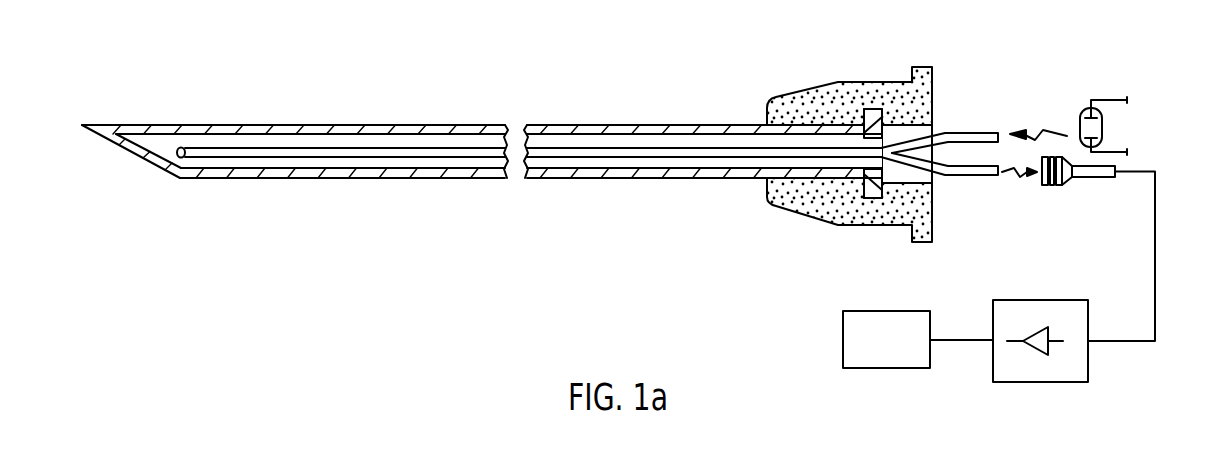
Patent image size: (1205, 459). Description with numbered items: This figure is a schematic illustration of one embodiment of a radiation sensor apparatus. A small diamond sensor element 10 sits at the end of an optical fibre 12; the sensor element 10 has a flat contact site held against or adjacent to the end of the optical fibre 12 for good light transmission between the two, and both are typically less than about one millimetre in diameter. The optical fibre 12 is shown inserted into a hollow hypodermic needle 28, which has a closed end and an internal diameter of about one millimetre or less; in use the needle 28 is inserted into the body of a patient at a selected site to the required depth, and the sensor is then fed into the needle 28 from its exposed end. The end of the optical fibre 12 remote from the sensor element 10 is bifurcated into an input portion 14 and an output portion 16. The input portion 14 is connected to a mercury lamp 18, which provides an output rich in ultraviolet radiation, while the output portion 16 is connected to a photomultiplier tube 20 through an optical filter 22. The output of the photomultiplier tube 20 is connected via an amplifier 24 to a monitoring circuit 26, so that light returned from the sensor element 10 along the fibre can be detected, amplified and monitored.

The diamond sensor element 10 is at (157, 163).
The optical fibre 12 is at (402, 148).
The input portion 14 is at (953, 131).
The output portion 16 is at (970, 177).
The mercury lamp 18 is at (1080, 114).
The photomultiplier tube 20 is at (1095, 179).
The optical filter 22 is at (1040, 182).
The amplifier 24 is at (1090, 369).
The monitoring circuit 26 is at (905, 310).
The hollow hypodermic needle 28 is at (315, 127).